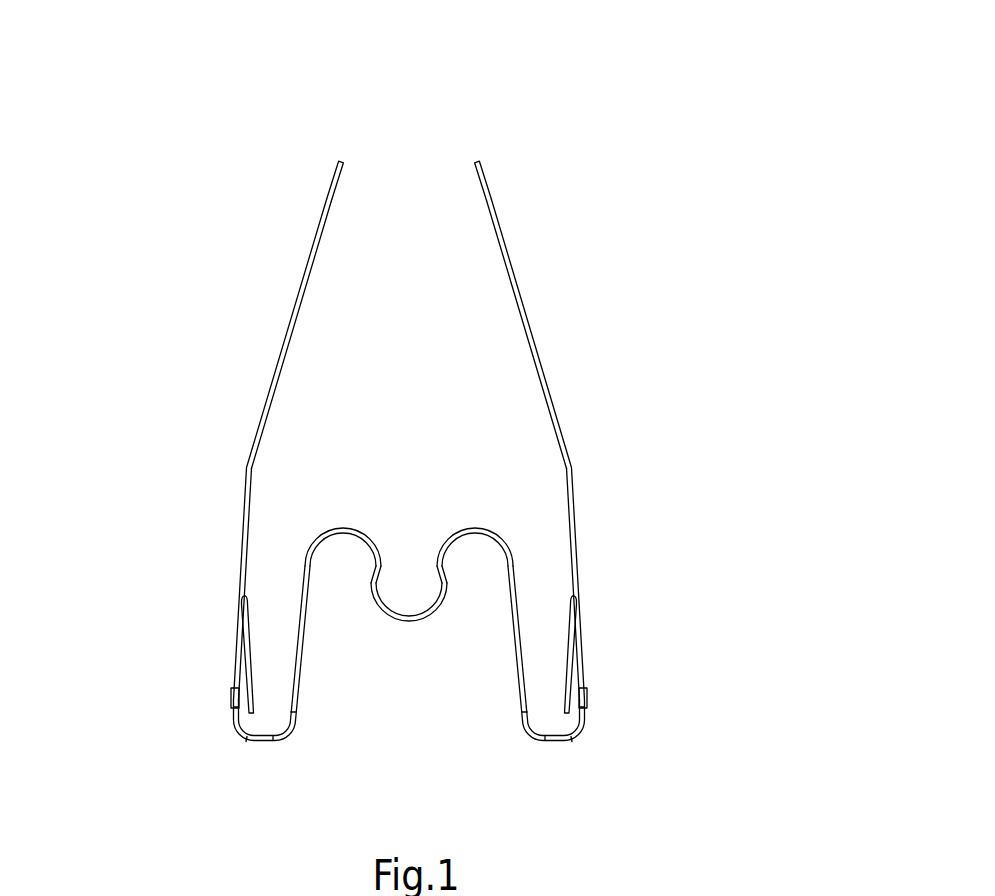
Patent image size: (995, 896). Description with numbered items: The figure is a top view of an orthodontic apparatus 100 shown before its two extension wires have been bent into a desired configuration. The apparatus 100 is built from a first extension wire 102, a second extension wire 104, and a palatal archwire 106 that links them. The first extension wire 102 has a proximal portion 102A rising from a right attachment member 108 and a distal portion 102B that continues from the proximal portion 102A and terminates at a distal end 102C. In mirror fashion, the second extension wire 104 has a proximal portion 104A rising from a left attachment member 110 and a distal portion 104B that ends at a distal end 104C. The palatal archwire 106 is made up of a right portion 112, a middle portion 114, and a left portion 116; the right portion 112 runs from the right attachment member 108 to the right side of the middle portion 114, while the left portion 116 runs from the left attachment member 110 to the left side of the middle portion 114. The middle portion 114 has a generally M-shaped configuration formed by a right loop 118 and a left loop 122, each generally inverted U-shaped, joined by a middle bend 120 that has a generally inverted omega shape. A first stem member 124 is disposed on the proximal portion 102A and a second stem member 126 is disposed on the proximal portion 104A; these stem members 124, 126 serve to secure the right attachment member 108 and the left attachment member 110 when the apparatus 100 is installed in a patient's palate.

The orthodontic apparatus 100 is at (583, 86).
The first extension wire 102 is at (267, 145).
The proximal portion 102A is at (214, 469).
The distal portion 102B is at (321, 156).
The distal end 102C is at (340, 162).
The second extension wire 104 is at (548, 145).
The proximal portion 104A is at (605, 469).
The distal portion 104B is at (496, 156).
The distal end 104C is at (477, 162).
The palatal archwire 106 is at (235, 750).
The right attachment member 108 is at (229, 700).
The left attachment member 110 is at (590, 697).
The right portion 112 is at (316, 654).
The middle portion 114 is at (410, 519).
The left portion 116 is at (496, 645).
The right loop 118 is at (347, 535).
The middle bend 120 is at (410, 622).
The left loop 122 is at (470, 535).
The first stem member 124 is at (250, 670).
The second stem member 126 is at (570, 652).